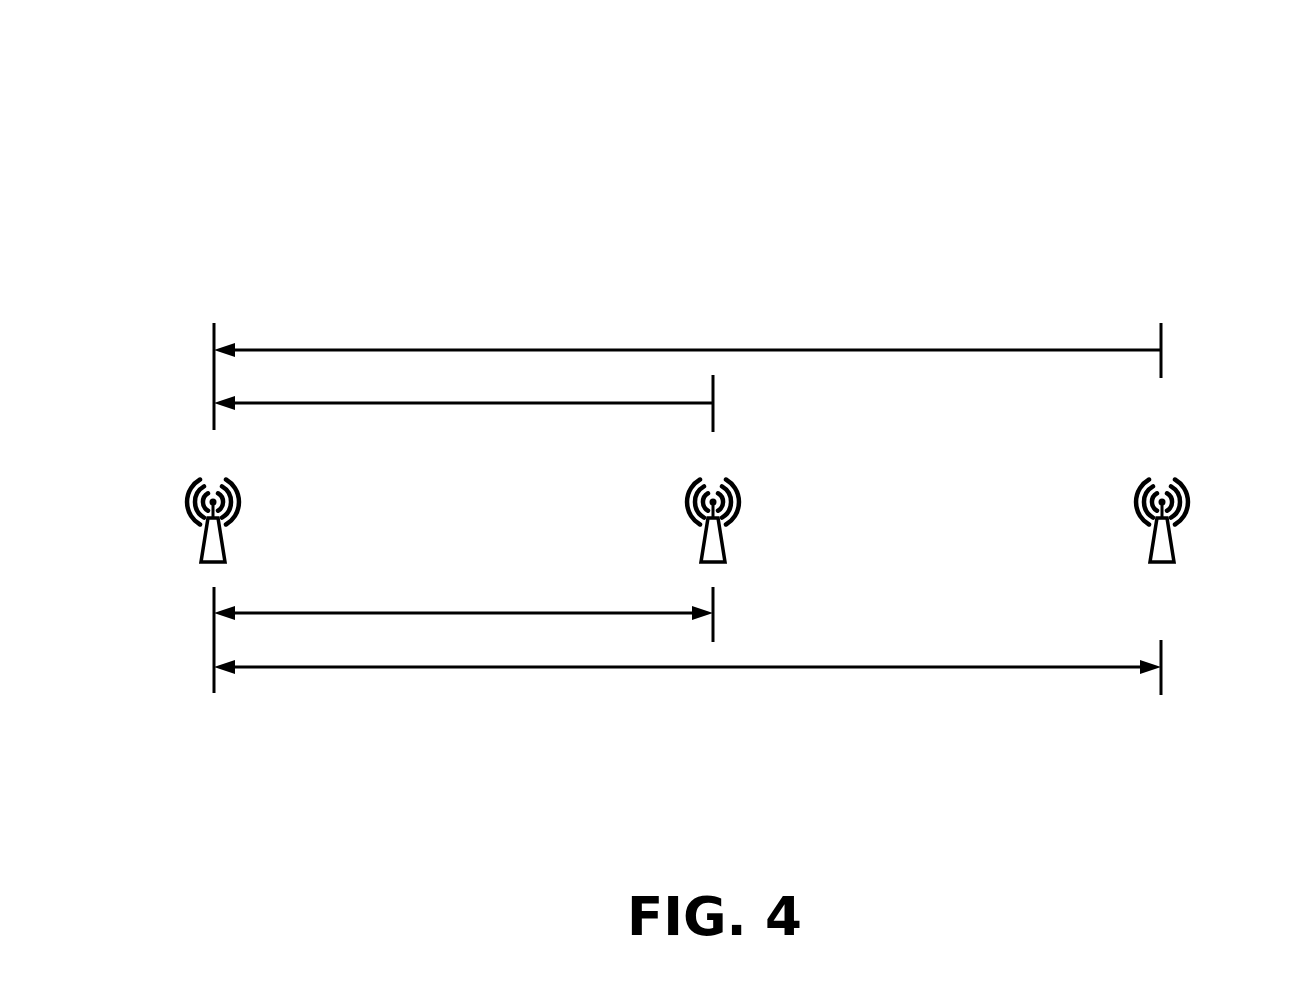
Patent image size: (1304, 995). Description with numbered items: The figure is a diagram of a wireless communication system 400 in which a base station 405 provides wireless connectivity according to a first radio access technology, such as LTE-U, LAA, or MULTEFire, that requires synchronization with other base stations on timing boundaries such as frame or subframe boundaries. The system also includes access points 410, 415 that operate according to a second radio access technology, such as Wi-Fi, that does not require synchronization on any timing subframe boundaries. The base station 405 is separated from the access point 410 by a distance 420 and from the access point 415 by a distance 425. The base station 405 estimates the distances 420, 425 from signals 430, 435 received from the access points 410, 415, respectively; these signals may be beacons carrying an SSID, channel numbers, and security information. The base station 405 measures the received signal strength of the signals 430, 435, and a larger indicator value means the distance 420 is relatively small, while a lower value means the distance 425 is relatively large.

The wireless communication system 400 is at (1170, 123).
The base station 405 is at (198, 550).
The access point 410 is at (697, 552).
The access point 415 is at (1146, 552).
The distance 420 is at (478, 613).
The distance 425 is at (978, 667).
The signal 430 is at (345, 404).
The signal 435 is at (872, 351).